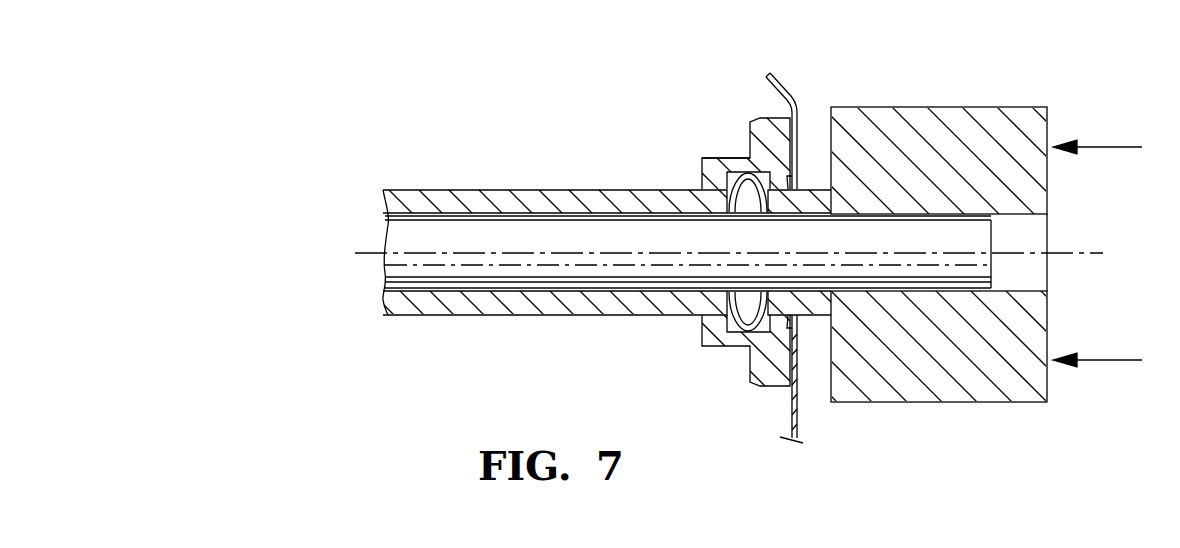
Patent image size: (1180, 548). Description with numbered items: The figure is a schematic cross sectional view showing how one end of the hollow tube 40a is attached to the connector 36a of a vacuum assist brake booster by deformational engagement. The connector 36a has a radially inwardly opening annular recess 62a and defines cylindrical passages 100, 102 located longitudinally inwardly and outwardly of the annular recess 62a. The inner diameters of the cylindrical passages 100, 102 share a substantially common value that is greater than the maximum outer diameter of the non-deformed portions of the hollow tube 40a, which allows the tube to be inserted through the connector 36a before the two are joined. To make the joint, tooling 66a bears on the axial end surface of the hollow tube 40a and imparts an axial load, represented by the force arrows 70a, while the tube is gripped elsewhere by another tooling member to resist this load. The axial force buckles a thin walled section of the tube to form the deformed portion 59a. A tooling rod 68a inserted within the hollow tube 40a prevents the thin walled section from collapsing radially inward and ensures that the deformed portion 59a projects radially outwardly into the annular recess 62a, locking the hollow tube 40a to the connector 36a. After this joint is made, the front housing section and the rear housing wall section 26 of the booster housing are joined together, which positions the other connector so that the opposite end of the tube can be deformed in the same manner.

The rear housing wall section 26 is at (782, 80).
The connector 36a is at (713, 340).
The hollow tube 40a is at (525, 197).
The deformed portion 59a is at (733, 189).
The annular recess 62a is at (762, 186).
The tooling 66a is at (983, 115).
The tooling rod 68a is at (396, 240).
The force arrows 70a is at (1118, 147).
The cylindrical passage 100 is at (705, 316).
The cylindrical passage 102 is at (772, 307).